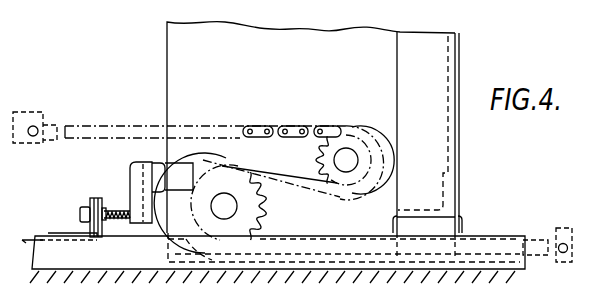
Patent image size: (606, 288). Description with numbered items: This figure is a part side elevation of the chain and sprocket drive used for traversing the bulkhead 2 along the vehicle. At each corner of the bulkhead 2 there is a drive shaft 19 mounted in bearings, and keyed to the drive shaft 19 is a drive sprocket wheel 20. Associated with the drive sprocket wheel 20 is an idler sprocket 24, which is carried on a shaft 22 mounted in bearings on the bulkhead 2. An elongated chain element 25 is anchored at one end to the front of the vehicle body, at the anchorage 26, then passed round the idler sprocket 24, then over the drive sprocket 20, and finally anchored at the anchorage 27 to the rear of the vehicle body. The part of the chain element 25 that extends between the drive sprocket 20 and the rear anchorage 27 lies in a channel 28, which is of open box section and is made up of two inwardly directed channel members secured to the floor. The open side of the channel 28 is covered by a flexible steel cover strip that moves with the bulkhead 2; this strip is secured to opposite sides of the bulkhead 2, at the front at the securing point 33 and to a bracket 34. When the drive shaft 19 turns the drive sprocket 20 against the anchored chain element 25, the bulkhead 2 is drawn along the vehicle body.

The bulkhead 2 is at (445, 151).
The drive shaft 19 is at (224, 203).
The drive sprocket wheel 20 is at (266, 214).
The shaft 22 is at (352, 162).
The idler sprocket 24 is at (360, 138).
The chain element 25 is at (144, 125).
The anchorage 26 is at (40, 121).
The anchorage 27 is at (566, 228).
The channel 28 is at (498, 248).
The front securing point 33 is at (452, 233).
The bracket 34 is at (137, 181).